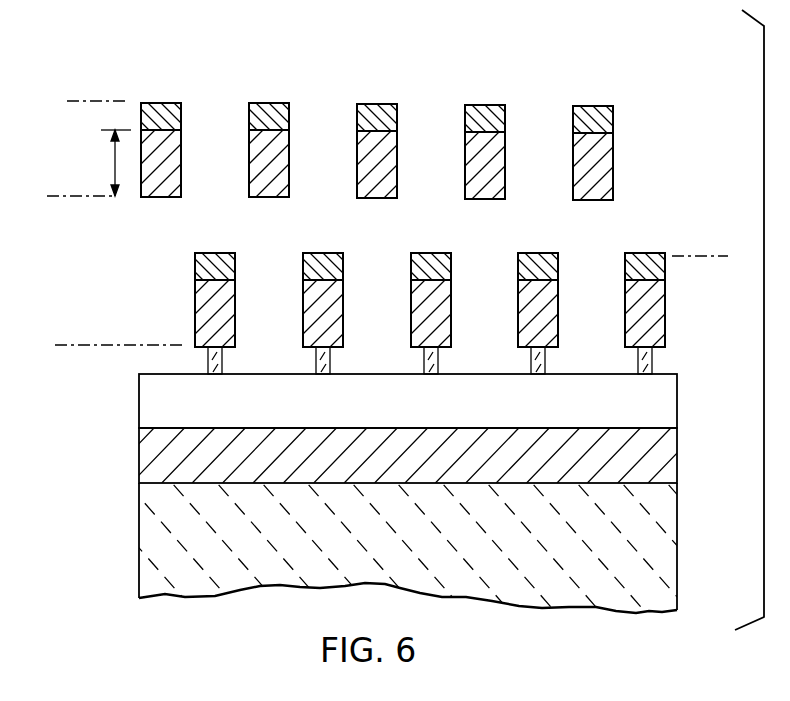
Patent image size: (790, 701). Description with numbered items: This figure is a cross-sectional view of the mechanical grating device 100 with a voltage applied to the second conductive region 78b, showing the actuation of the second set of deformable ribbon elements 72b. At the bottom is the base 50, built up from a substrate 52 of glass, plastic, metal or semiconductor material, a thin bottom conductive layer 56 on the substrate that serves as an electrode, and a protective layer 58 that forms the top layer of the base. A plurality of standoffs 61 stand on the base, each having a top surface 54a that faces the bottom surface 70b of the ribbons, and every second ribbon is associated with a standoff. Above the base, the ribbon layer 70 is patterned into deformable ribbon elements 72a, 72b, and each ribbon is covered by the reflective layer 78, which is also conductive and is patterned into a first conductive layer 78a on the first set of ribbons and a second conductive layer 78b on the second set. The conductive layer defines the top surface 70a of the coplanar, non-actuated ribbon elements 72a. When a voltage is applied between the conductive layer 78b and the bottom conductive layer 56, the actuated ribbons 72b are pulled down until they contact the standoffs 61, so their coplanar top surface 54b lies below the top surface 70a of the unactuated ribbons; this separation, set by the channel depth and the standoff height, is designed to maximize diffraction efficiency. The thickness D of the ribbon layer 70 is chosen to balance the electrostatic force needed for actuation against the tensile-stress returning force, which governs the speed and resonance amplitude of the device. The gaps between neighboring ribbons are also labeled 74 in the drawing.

The mechanical grating device 100 is at (660, 83).
The ribbon layer 70 is at (614, 165).
The top surface of the ribbon elements 70a is at (78, 100).
The bottom surface of the ribbon elements 70b is at (50, 199).
The first set of deformable ribbon elements 72a is at (171, 166).
The second set of deformable ribbon elements 72b is at (200, 306).
The gap 74 is at (214, 112).
The reflective layer 78 is at (614, 120).
The first conductive layer 78a is at (490, 116).
The second conductive layer 78b is at (328, 263).
The top surface of the standoffs 54a is at (70, 345).
The top surface of the actuated ribbon elements 54b is at (715, 256).
The standoffs 61 is at (547, 363).
The protective layer 58 is at (680, 405).
The bottom conductive layer 56 is at (680, 470).
The substrate 52 is at (680, 543).
The base 50 is at (114, 504).
The thickness of the ribbon layer D is at (112, 163).